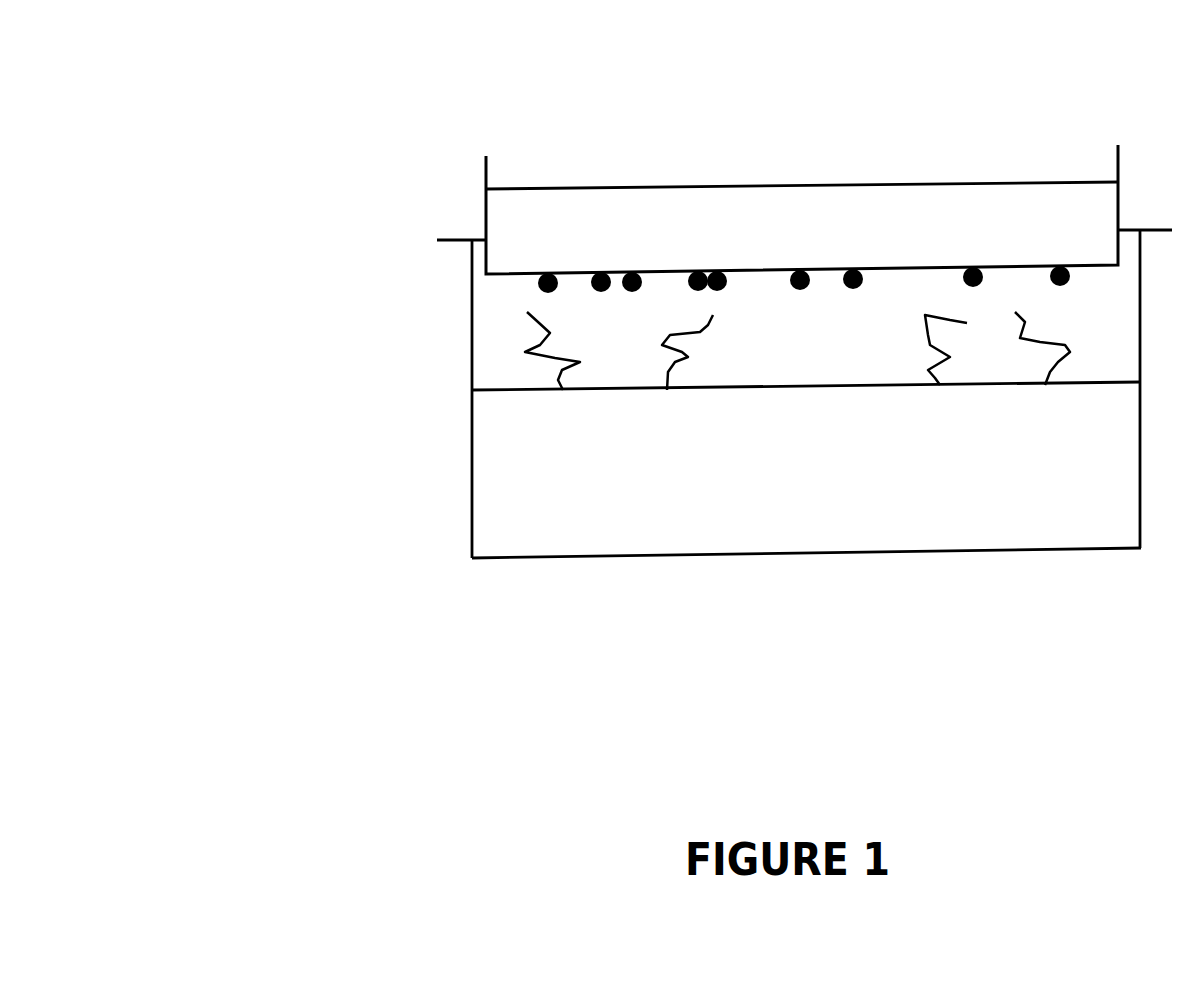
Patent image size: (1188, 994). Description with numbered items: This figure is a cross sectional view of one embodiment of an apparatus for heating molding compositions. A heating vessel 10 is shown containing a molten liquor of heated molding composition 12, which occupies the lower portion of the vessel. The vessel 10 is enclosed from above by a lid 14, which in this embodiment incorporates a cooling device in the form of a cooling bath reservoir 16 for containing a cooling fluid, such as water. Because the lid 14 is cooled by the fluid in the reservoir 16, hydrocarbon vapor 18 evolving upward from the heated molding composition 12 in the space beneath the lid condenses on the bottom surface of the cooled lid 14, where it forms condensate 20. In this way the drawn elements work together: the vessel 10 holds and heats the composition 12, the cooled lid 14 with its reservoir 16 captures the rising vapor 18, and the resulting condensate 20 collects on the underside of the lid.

The heating vessel 10 is at (457, 471).
The molding composition 12 is at (806, 470).
The lid 14 is at (651, 156).
The cooling bath reservoir 16 is at (802, 209).
The hydrocarbon vapor 18 is at (797, 351).
The condensate 20 is at (899, 251).